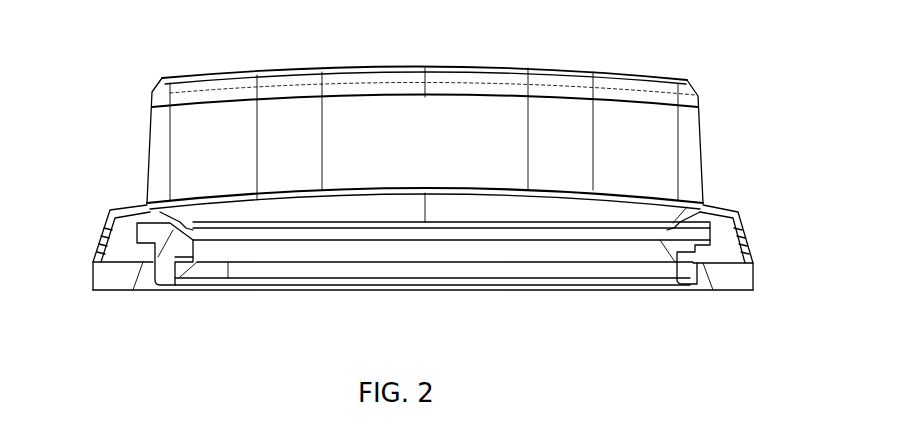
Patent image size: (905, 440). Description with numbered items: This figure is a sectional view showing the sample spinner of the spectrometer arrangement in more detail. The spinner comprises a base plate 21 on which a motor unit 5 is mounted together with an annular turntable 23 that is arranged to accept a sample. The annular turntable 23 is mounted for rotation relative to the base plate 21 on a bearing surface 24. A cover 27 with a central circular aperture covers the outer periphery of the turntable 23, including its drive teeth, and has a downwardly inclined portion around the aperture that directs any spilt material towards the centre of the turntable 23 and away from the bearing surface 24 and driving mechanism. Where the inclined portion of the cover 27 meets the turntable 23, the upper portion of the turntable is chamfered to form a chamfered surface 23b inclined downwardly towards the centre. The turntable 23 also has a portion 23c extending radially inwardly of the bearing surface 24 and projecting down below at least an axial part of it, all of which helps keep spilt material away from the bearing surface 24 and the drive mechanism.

The motor unit 5 is at (205, 108).
The cover 27 is at (633, 210).
The base plate 21 is at (738, 285).
The annular turntable 23 is at (683, 238).
The chamfered surface 23b is at (198, 238).
The bearing surface 24 is at (683, 268).
The radially inward portion of turntable 23c is at (650, 270).